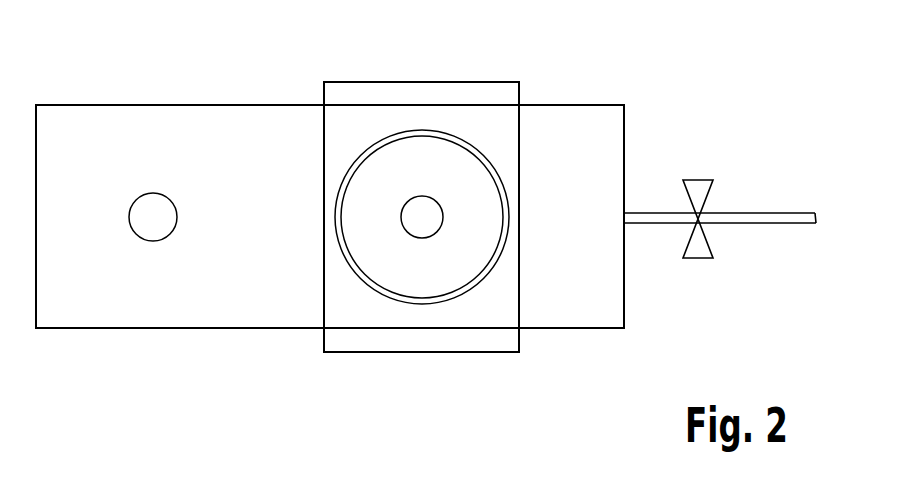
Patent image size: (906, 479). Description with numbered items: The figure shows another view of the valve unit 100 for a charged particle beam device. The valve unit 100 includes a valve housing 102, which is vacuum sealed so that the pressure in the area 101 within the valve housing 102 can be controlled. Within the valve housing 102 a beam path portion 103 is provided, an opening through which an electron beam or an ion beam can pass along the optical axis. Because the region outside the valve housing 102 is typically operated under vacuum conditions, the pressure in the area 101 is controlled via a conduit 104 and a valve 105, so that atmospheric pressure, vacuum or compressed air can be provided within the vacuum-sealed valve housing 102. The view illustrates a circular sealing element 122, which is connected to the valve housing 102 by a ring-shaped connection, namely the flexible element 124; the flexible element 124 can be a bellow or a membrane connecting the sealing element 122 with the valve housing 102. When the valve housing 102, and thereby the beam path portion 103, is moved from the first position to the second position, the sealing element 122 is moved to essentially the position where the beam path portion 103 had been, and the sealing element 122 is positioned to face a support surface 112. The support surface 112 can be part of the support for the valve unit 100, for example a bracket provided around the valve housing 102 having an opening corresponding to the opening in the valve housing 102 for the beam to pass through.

The valve unit 100 is at (426, 234).
The area 101 is at (287, 240).
The valve housing 102 is at (153, 328).
The beam path portion 103 is at (154, 210).
The conduit 104 is at (765, 210).
The valve 105 is at (705, 248).
The support surface 112 is at (420, 352).
The sealing element 122 is at (472, 238).
The flexible element 124 is at (505, 208).